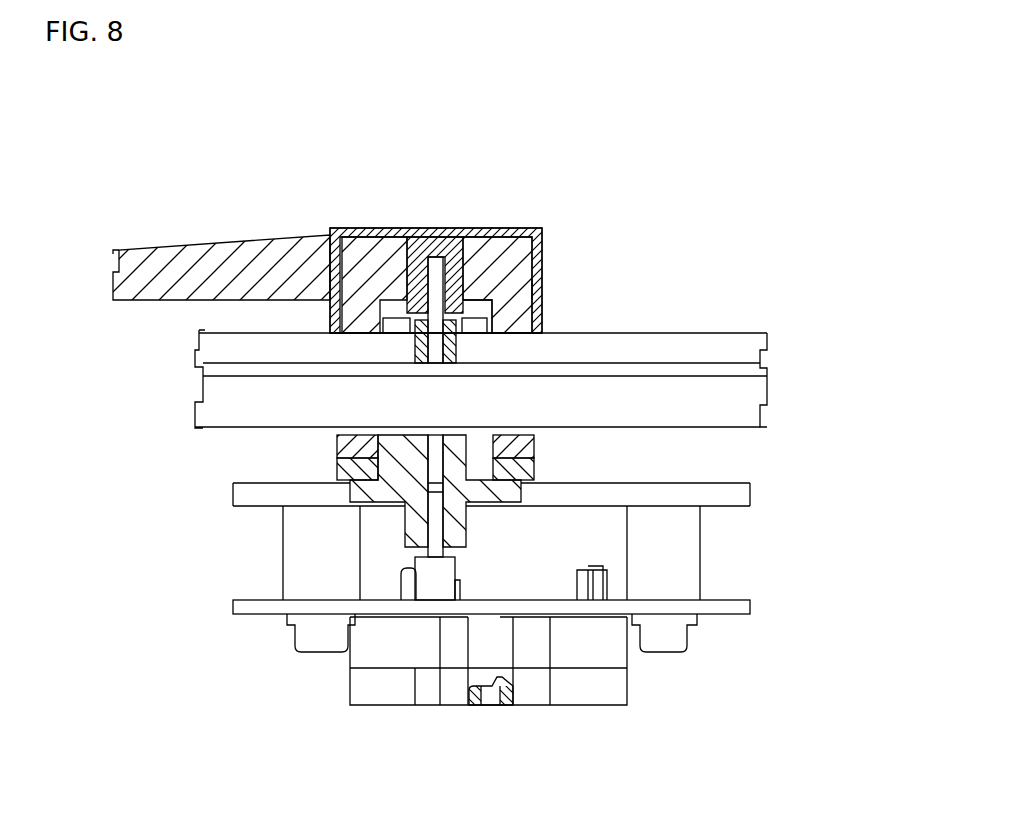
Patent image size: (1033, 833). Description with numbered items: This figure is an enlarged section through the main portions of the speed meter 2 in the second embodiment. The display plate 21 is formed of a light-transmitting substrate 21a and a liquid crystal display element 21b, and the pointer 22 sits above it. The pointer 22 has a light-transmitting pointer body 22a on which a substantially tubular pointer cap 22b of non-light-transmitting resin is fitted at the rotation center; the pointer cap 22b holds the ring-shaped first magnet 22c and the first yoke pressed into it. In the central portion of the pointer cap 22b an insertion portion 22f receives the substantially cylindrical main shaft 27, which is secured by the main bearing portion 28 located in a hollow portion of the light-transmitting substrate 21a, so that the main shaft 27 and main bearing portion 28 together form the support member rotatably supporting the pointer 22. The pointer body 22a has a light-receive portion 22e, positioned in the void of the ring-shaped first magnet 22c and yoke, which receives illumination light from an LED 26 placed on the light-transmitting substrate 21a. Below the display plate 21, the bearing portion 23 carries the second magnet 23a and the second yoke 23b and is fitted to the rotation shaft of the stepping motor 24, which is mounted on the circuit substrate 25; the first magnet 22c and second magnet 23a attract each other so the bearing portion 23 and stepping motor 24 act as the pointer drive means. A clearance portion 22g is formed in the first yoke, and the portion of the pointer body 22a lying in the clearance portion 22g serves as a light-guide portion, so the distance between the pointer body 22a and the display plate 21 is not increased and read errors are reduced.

The speed meter 2 is at (637, 206).
The display plate 21 is at (773, 368).
The light-transmitting substrate 21a is at (720, 334).
The liquid crystal display element 21b is at (737, 415).
The pointer 22 is at (316, 221).
The pointer body 22a is at (217, 257).
The pointer cap 22b is at (383, 228).
The first magnet 22c is at (523, 318).
The light-receive portion 22e is at (507, 333).
The insertion portion 22f is at (437, 283).
The clearance portion 22g is at (529, 290).
The bearing portion 23 is at (365, 488).
The second magnet 23a is at (525, 453).
The second yoke 23b is at (527, 475).
The stepping motor 24 is at (587, 705).
The circuit substrate 25 is at (730, 610).
The LED 26 is at (475, 330).
The main shaft 27 is at (447, 272).
The main bearing portion 28 is at (420, 332).